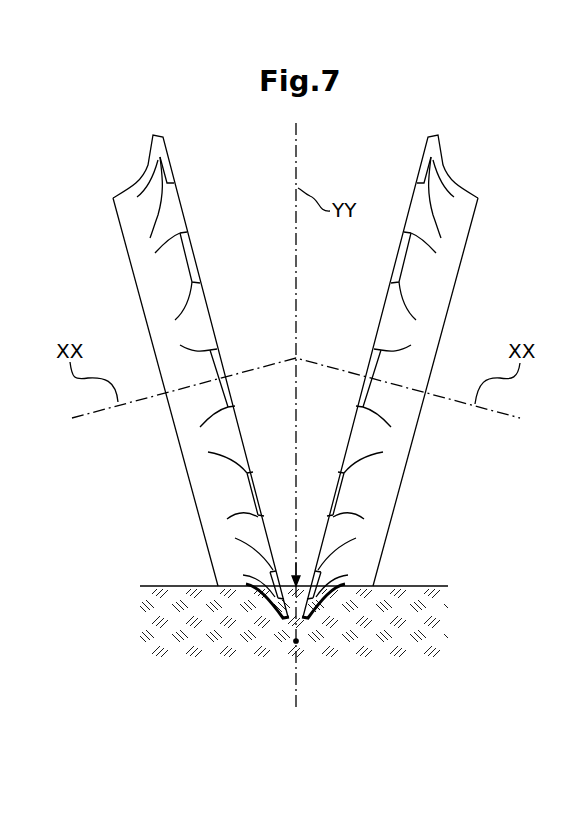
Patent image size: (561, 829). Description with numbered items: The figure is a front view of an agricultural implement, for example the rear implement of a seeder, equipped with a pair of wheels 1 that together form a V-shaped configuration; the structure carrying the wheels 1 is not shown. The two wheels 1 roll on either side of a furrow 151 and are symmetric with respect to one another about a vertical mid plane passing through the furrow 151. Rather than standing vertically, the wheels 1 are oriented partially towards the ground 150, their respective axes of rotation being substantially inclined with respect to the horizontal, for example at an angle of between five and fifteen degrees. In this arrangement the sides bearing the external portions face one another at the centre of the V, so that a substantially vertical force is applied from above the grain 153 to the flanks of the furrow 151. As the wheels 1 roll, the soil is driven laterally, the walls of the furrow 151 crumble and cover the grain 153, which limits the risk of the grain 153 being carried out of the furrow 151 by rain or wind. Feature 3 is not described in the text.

The wheel 1 is at (206, 170).
The cutting edge with teeth 3 is at (168, 229).
The ground 150 is at (155, 585).
The furrow 151 is at (298, 560).
The grain 153 is at (296, 641).